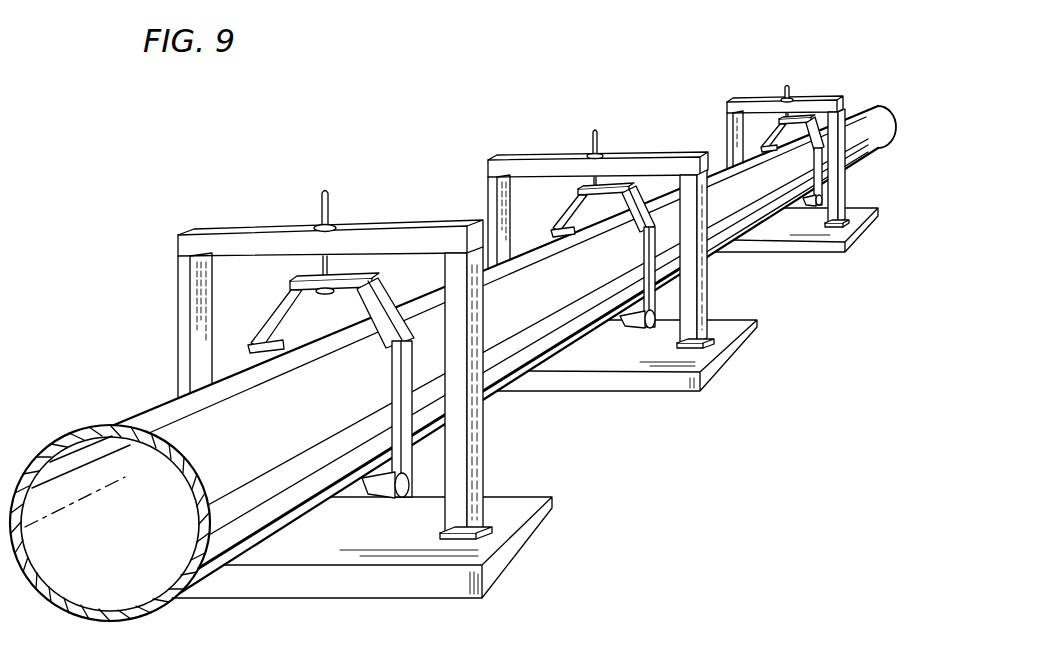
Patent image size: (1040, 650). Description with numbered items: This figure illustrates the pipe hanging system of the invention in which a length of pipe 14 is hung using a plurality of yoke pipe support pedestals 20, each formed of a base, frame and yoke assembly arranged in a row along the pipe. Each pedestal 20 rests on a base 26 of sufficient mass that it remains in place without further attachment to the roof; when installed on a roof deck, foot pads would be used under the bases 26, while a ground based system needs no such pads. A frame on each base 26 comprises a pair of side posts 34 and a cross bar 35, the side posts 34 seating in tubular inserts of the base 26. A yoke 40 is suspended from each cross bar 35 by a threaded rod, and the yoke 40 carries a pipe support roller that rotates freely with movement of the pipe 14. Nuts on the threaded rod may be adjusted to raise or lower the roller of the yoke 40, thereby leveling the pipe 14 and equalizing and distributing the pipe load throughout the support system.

The pipe network 14 is at (257, 536).
The yoke pipe support pedestal 20 is at (536, 320).
The base 26 is at (515, 553).
The side posts 34 is at (485, 446).
The cross bar 35 is at (400, 232).
The yoke 40 is at (392, 396).